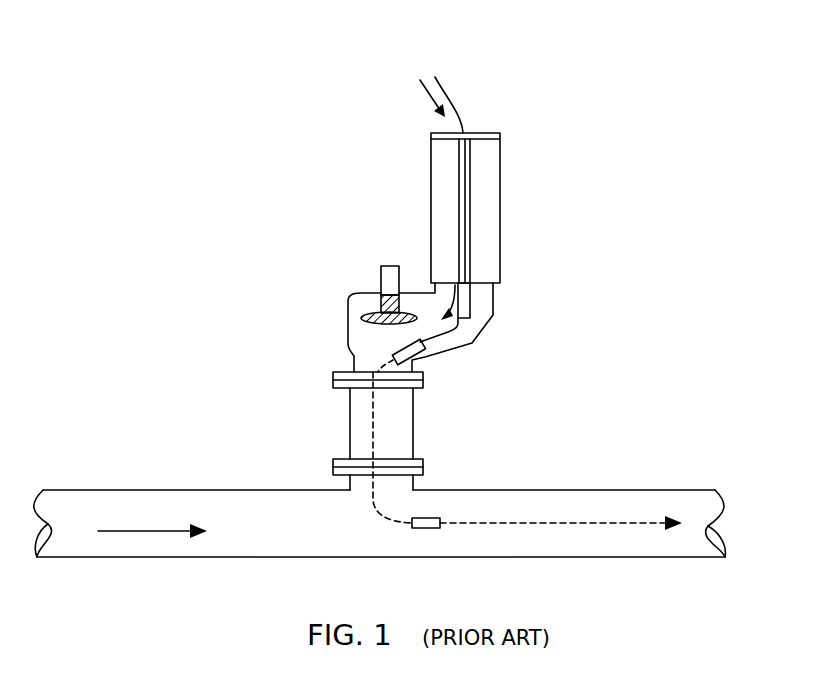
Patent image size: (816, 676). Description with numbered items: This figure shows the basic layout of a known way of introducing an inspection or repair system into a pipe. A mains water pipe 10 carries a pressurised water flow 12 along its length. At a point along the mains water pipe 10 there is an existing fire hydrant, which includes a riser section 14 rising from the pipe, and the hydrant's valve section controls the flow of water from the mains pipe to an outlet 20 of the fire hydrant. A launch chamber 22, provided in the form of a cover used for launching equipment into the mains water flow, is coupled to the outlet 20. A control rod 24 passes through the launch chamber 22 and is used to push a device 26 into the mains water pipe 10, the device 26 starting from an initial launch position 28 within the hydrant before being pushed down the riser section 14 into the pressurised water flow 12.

The mains water pipe 10 is at (230, 490).
The pressurised water flow 12 is at (148, 531).
The riser section 14 is at (413, 430).
The outlet 20 is at (513, 275).
The launch chamber 22 is at (500, 212).
The control rod 24 is at (453, 118).
The device 26 is at (430, 518).
The initial launch position 28 is at (470, 306).